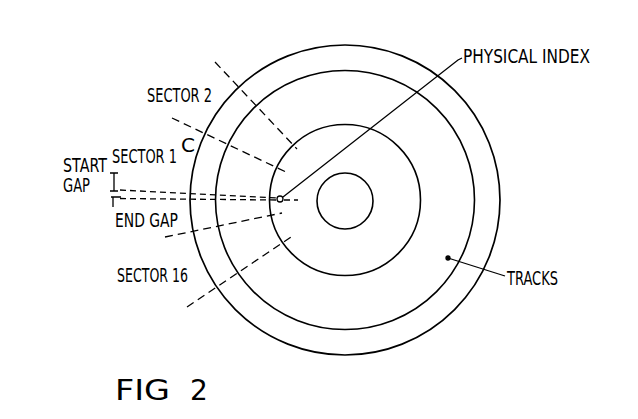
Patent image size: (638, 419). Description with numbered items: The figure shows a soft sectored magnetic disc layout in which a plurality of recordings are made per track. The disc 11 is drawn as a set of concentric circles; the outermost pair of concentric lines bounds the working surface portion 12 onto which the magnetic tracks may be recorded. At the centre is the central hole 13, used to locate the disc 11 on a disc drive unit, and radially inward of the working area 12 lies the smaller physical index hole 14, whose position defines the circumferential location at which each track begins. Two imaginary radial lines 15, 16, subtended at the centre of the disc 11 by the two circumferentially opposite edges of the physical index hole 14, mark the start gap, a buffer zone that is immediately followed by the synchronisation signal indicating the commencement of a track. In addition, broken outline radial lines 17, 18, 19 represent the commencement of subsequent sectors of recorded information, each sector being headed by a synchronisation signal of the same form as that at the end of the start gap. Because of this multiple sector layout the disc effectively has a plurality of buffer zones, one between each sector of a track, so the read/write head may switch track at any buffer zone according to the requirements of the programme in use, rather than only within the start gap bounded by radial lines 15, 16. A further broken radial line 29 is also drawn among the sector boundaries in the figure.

The disc 11 is at (500, 210).
The working surface portion 12 is at (453, 168).
The central hole 13 is at (372, 193).
The physical index hole 14 is at (282, 203).
The radial line 15 is at (141, 192).
The radial line 16 is at (130, 198).
The broken outline radial line 17 is at (228, 73).
The broken outline radial line 18 is at (190, 128).
The broken outline radial line 19 is at (165, 239).
The sector 16 lower boundary 29 is at (203, 293).